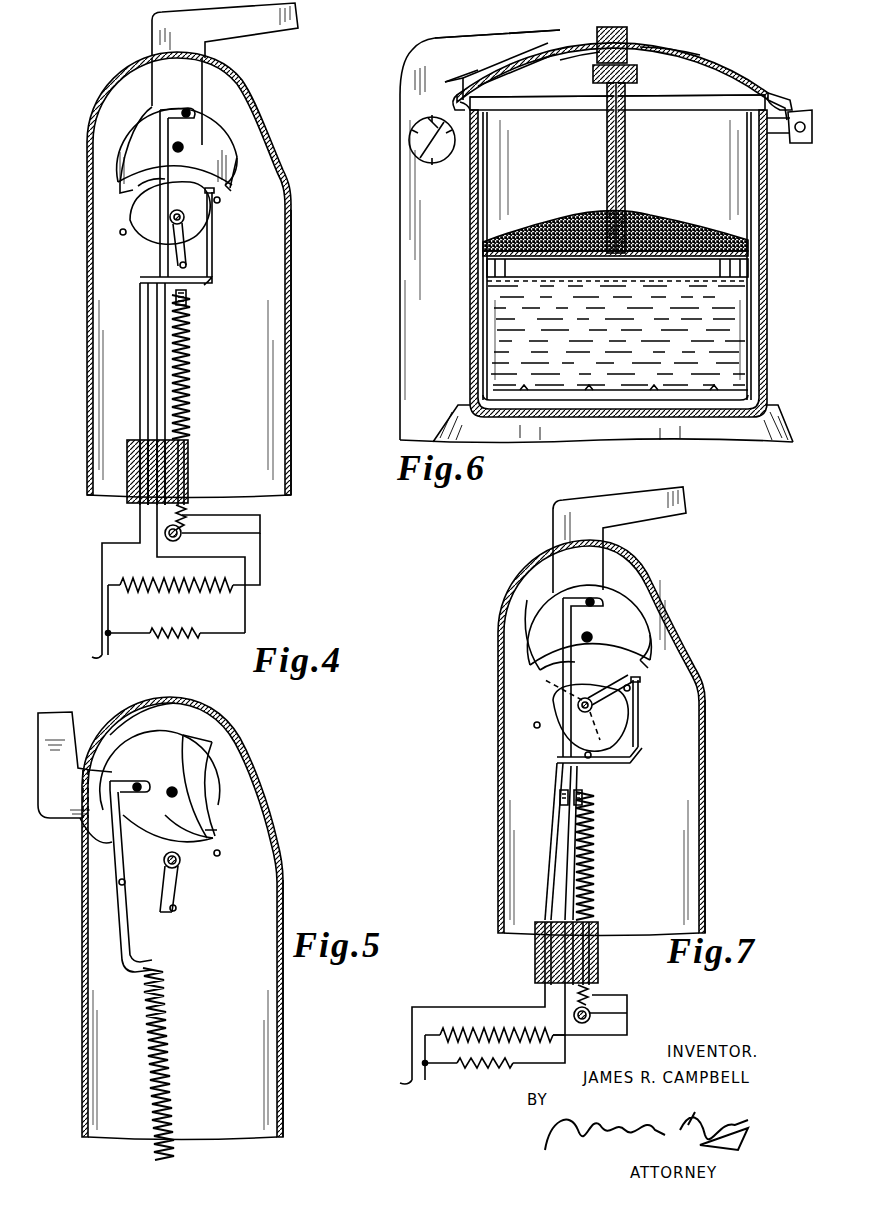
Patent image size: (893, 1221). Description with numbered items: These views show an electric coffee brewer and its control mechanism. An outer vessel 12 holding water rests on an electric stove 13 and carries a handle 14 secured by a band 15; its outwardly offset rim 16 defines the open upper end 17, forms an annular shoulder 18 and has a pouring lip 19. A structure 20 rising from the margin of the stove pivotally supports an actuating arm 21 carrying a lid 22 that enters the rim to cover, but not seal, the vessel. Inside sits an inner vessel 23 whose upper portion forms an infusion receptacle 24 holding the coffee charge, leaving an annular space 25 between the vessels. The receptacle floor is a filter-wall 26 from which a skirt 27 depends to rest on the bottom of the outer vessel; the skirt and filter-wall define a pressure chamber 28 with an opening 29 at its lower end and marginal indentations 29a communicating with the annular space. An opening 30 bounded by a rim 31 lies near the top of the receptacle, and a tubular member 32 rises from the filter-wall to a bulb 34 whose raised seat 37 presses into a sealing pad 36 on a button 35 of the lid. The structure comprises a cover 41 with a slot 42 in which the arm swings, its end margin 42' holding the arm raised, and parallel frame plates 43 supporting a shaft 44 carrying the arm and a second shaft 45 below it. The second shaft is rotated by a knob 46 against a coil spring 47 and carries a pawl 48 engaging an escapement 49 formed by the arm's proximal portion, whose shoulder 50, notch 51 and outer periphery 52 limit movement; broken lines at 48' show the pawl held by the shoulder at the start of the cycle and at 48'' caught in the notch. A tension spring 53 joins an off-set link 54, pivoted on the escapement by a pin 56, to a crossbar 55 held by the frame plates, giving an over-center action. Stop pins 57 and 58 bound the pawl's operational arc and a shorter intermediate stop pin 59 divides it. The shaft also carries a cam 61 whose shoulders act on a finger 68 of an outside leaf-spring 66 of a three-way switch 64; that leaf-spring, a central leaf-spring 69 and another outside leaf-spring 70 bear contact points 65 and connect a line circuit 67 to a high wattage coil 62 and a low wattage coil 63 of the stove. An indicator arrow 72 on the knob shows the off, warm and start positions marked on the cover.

In FIG. 6, the outer vessel 12 is at (767, 316).
In FIG. 6, the stove 13 is at (780, 425).
In FIG. 6, the handle 14 is at (803, 110).
In FIG. 6, the band 15 is at (785, 136).
In FIG. 6, the outwardly offset rim 16 is at (781, 95).
In FIG. 6, the open upper end 17 is at (768, 88).
In FIG. 6, the annular shoulder 18 is at (493, 107).
In FIG. 6, the pouring lip 19 is at (471, 70).
In FIG. 6, the structure 20 is at (400, 228).
In FIG. 4, the actuating arm 21 is at (253, 31).
In FIG. 6, the actuating arm 21 is at (427, 60).
In FIG. 5, the actuating arm 21 is at (40, 763).
In FIG. 7, the actuating arm 21 is at (652, 514).
In FIG. 6, the lid 22 is at (690, 55).
In FIG. 6, the inner vessel 23 is at (752, 223).
In FIG. 6, the infusion receptacle 24 is at (758, 191).
In FIG. 6, the annular space 25 is at (750, 254).
In FIG. 6, the filter-wall 26 is at (750, 271).
In FIG. 6, the skirt 27 is at (756, 346).
In FIG. 6, the pressure chamber 28 is at (740, 366).
In FIG. 6, the opening 29 is at (690, 393).
In FIG. 6, the marginal indentations 29a is at (645, 392).
In FIG. 6, the opening 30 is at (692, 100).
In FIG. 6, the rim 31 is at (535, 110).
In FIG. 6, the tubular member 32 is at (626, 173).
In FIG. 6, the bulb 34 is at (628, 90).
In FIG. 6, the button 35 is at (627, 40).
In FIG. 6, the sealing pad 36 is at (668, 50).
In FIG. 6, the raised seat 37 is at (600, 101).
In FIG. 4, the cover 41 is at (87, 322).
In FIG. 5, the cover 41 is at (82, 921).
In FIG. 7, the cover 41 is at (498, 746).
In FIG. 5, the slot 42 is at (127, 711).
In FIG. 4, the end margin 42' is at (59, 152).
In FIG. 5, the end margin 42' is at (51, 804).
In FIG. 7, the end margin 42' is at (465, 640).
In FIG. 4, the frame plates 43 is at (289, 295).
In FIG. 5, the frame plates 43 is at (283, 881).
In FIG. 7, the frame plates 43 is at (705, 761).
In FIG. 4, the shaft 44 is at (182, 146).
In FIG. 5, the shaft 44 is at (178, 792).
In FIG. 7, the shaft 44 is at (591, 636).
In FIG. 4, the second shaft 45 is at (197, 257).
In FIG. 5, the second shaft 45 is at (180, 862).
In FIG. 7, the second shaft 45 is at (628, 732).
In FIG. 6, the knob 46 is at (410, 144).
In FIG. 4, the coil spring 47 is at (168, 218).
In FIG. 7, the coil spring 47 is at (585, 705).
In FIG. 4, the pawl 48 is at (145, 247).
In FIG. 5, the pawl 48 is at (187, 889).
In FIG. 7, the pawl 48 is at (603, 681).
In FIG. 4, the pawl position 48' is at (249, 195).
In FIG. 7, the pawl position 48'' is at (553, 710).
In FIG. 4, the escapement 49 is at (120, 144).
In FIG. 5, the escapement 49 is at (150, 748).
In FIG. 7, the escapement 49 is at (528, 621).
In FIG. 4, the shoulder 50 is at (226, 182).
In FIG. 5, the shoulder 50 is at (184, 735).
In FIG. 7, the shoulder 50 is at (647, 669).
In FIG. 4, the notch 51 is at (148, 175).
In FIG. 5, the notch 51 is at (215, 837).
In FIG. 7, the notch 51 is at (528, 678).
In FIG. 4, the outer periphery 52 is at (121, 142).
In FIG. 5, the outer periphery 52 is at (84, 849).
In FIG. 7, the outer periphery 52 is at (520, 583).
In FIG. 4, the tension spring 53 is at (190, 381).
In FIG. 5, the tension spring 53 is at (168, 1021).
In FIG. 7, the tension spring 53 is at (607, 856).
In FIG. 4, the off-set link 54 is at (158, 150).
In FIG. 5, the off-set link 54 is at (127, 936).
In FIG. 7, the off-set link 54 is at (560, 758).
In FIG. 4, the crossbar 55 is at (182, 534).
In FIG. 7, the crossbar 55 is at (592, 1013).
In FIG. 4, the pin 56 is at (186, 110).
In FIG. 5, the pin 56 is at (140, 785).
In FIG. 7, the pin 56 is at (596, 602).
In FIG. 4, the stop pin 57 is at (186, 268).
In FIG. 5, the stop pin 57 is at (176, 910).
In FIG. 7, the stop pin 57 is at (592, 761).
In FIG. 4, the stop pin 58 is at (219, 202).
In FIG. 5, the stop pin 58 is at (220, 854).
In FIG. 7, the stop pin 58 is at (631, 689).
In FIG. 4, the third stop pin 59 is at (120, 233).
In FIG. 5, the third stop pin 59 is at (125, 884).
In FIG. 7, the third stop pin 59 is at (533, 726).
In FIG. 4, the cam 61 is at (128, 207).
In FIG. 7, the cam 61 is at (625, 751).
In FIG. 4, the high wattage coil 62 is at (235, 591).
In FIG. 7, the high wattage coil 62 is at (475, 1030).
In FIG. 4, the low wattage coil 63 is at (186, 641).
In FIG. 7, the low wattage coil 63 is at (480, 1071).
In FIG. 7, the three-way switch 64 is at (543, 869).
In FIG. 4, the contact points 65 is at (150, 332).
In FIG. 7, the contact points 65 is at (556, 811).
In FIG. 4, the outside leaf-spring 66 is at (150, 355).
In FIG. 7, the outside leaf-spring 66 is at (557, 839).
In FIG. 4, the line circuit 67 is at (100, 657).
In FIG. 7, the line circuit 67 is at (412, 1083).
In FIG. 4, the finger 68 is at (213, 241).
In FIG. 7, the finger 68 is at (640, 716).
In FIG. 4, the central leaf-spring 69 is at (165, 387).
In FIG. 7, the central leaf-spring 69 is at (565, 898).
In FIG. 4, the outside leaf-spring 70 is at (190, 341).
In FIG. 7, the outside leaf-spring 70 is at (597, 851).
In FIG. 6, the indicator arrow 72 is at (418, 131).